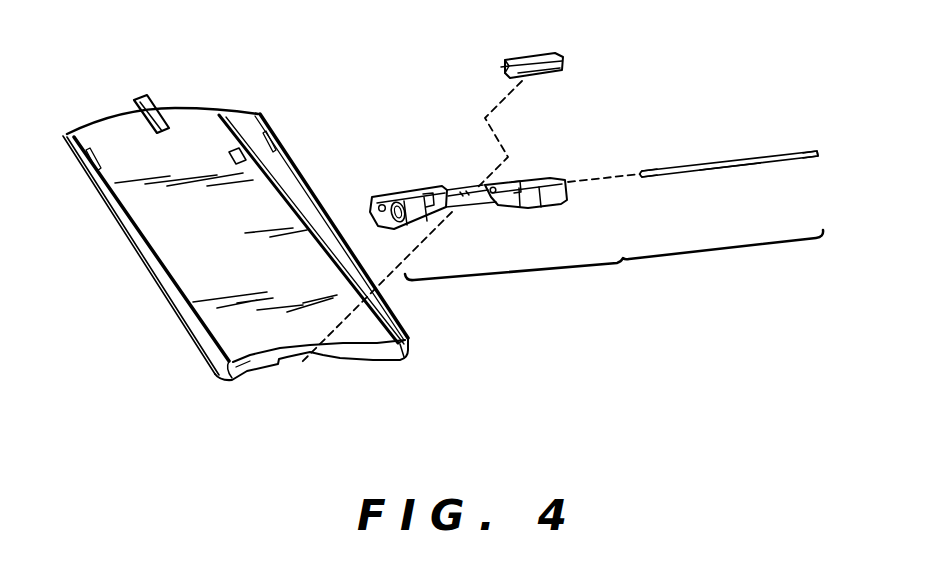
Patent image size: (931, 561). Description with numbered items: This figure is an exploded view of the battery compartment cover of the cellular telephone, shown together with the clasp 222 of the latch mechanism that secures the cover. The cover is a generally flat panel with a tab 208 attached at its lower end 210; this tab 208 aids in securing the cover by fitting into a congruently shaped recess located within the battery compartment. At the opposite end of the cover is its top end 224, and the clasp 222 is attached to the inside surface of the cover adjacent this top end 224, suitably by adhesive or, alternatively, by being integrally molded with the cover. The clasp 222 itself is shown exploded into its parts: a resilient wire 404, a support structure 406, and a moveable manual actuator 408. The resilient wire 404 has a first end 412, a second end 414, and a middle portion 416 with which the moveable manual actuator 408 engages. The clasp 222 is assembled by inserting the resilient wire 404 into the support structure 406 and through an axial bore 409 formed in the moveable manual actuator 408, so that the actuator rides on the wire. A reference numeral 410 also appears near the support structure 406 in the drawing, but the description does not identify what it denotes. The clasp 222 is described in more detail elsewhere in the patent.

The tab 208 is at (148, 103).
The lower end 210 is at (111, 122).
The clasp 222 is at (561, 222).
The top end 224 is at (253, 364).
The resilient wire 404 is at (734, 156).
The support structure 406 is at (533, 178).
The moveable manual actuator 408 is at (537, 56).
The axial bore 409 is at (506, 68).
The left connector block 410 is at (371, 207).
The first end 412 is at (641, 173).
The second end 414 is at (819, 153).
The middle portion 416 is at (722, 167).